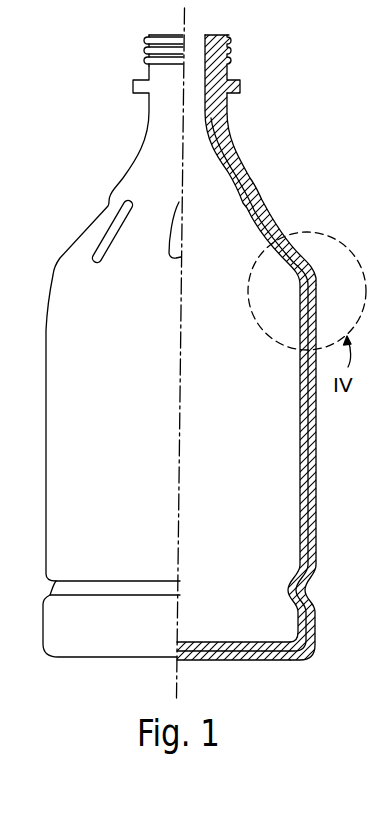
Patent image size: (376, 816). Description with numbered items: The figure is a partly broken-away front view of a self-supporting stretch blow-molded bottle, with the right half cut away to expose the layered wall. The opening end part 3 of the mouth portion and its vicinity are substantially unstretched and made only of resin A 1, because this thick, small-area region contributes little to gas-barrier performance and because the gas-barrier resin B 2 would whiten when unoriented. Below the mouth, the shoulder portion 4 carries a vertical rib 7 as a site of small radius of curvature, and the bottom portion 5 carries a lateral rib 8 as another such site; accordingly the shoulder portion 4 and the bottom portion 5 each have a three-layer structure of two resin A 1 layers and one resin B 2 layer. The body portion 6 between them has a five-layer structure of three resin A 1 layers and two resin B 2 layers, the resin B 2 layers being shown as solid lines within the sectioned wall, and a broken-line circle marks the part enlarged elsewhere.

The resin A 1 is at (233, 162).
The resin B 2 is at (317, 518).
The opening end part 3 is at (229, 36).
The shoulder portion 4 is at (248, 185).
The bottom portion 5 is at (247, 662).
The body portion 6 is at (317, 433).
The vertical rib 7 is at (113, 223).
The lateral rib 8 is at (58, 590).